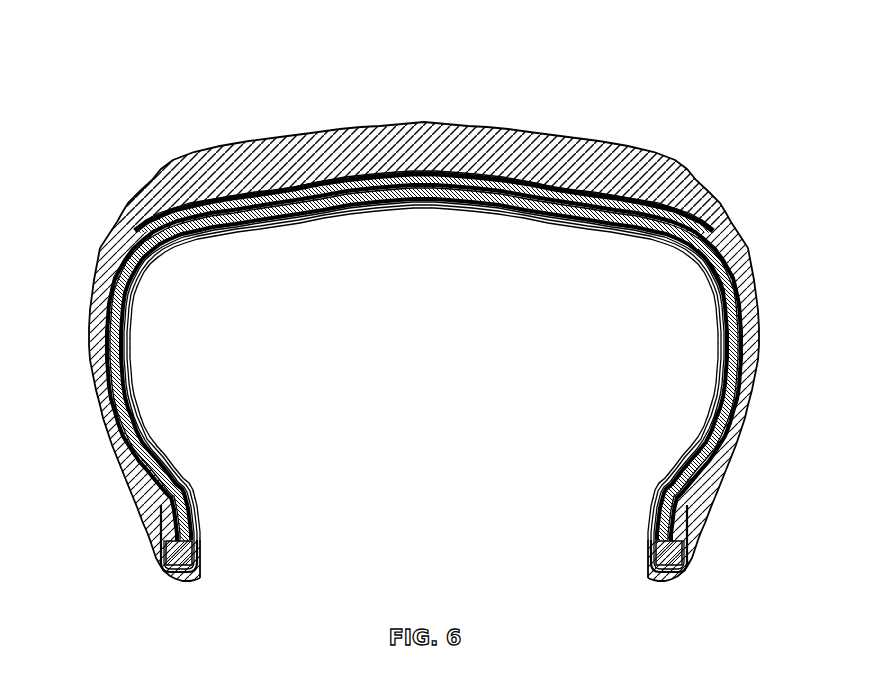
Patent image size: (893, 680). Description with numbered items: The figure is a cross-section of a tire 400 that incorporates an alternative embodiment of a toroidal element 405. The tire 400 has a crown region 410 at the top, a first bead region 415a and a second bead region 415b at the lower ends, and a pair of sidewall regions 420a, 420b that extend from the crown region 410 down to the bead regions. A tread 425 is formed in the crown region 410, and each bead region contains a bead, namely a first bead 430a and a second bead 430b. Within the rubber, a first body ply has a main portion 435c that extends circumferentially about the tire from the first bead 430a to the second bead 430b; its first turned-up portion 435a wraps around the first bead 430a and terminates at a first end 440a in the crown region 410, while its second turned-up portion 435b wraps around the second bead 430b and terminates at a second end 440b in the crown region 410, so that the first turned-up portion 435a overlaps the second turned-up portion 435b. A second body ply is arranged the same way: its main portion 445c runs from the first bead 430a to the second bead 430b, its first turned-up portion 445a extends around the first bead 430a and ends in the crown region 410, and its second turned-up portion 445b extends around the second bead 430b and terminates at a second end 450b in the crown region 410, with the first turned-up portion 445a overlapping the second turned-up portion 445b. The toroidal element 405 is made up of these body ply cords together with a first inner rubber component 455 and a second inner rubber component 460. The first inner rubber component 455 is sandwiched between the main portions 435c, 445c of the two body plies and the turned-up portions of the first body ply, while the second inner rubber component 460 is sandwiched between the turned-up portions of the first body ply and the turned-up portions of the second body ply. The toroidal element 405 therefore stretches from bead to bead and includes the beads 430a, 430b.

The tire 400 is at (127, 44).
The toroidal element 405 is at (729, 236).
The crown region 410 is at (772, 150).
The first bead region 415a is at (772, 530).
The second bead region 415b is at (84, 530).
The sidewall region 420a is at (772, 237).
The sidewall region 420b is at (84, 237).
The tread 425 is at (466, 118).
The first bead 430a is at (673, 557).
The second bead 430b is at (167, 561).
The first turned-up portion 435a is at (590, 208).
The second turned-up portion 435b is at (262, 208).
The main portion 435c is at (217, 231).
The first end 440a is at (310, 200).
The second end 440b is at (552, 190).
The first turned-up portion 445a is at (578, 193).
The second turned-up portion 445b is at (257, 182).
The main portion 445c is at (163, 253).
The second end 450b is at (289, 180).
The first inner rubber component 455 is at (706, 258).
The second inner rubber component 460 is at (664, 204).